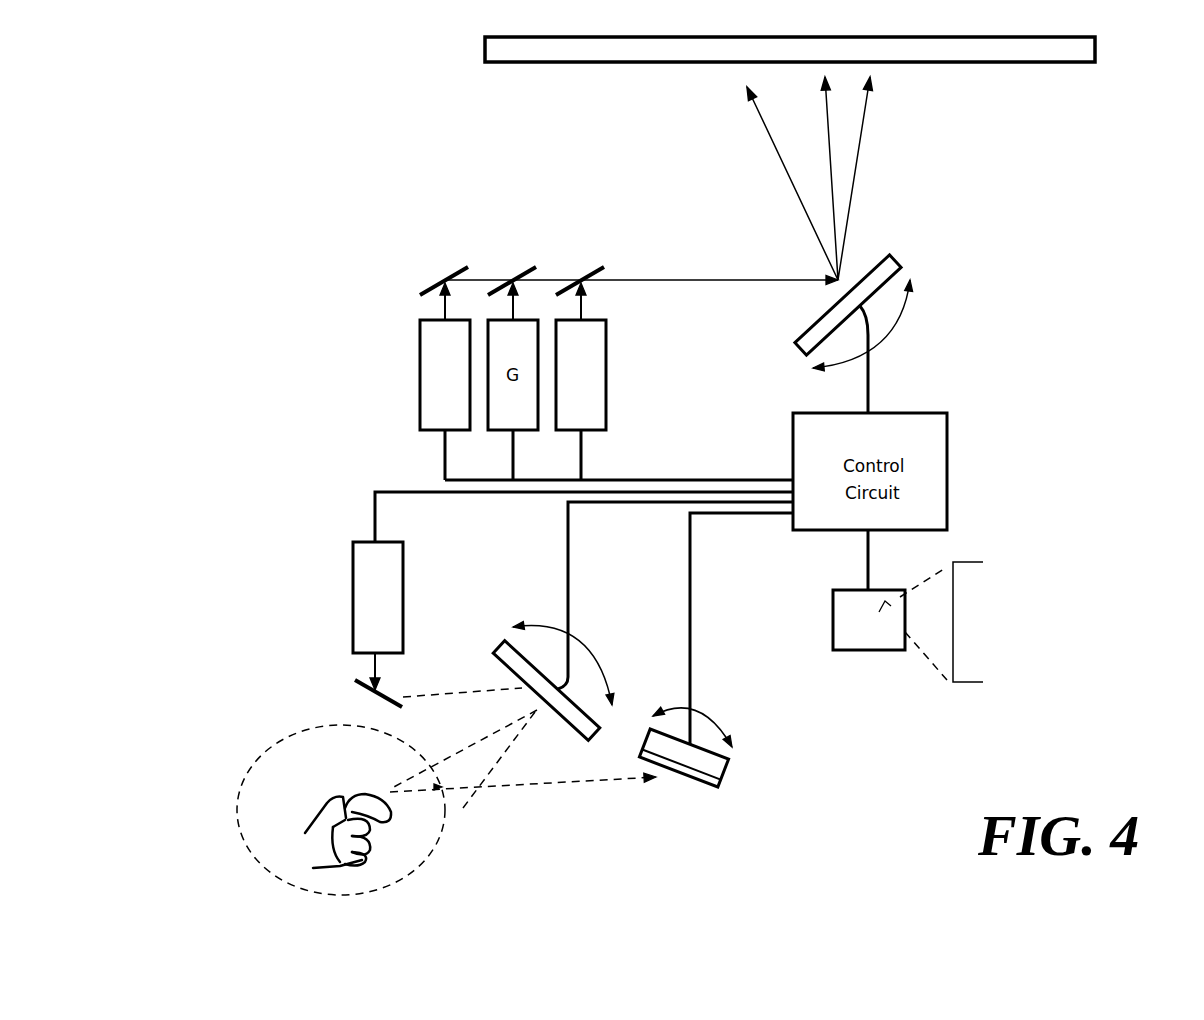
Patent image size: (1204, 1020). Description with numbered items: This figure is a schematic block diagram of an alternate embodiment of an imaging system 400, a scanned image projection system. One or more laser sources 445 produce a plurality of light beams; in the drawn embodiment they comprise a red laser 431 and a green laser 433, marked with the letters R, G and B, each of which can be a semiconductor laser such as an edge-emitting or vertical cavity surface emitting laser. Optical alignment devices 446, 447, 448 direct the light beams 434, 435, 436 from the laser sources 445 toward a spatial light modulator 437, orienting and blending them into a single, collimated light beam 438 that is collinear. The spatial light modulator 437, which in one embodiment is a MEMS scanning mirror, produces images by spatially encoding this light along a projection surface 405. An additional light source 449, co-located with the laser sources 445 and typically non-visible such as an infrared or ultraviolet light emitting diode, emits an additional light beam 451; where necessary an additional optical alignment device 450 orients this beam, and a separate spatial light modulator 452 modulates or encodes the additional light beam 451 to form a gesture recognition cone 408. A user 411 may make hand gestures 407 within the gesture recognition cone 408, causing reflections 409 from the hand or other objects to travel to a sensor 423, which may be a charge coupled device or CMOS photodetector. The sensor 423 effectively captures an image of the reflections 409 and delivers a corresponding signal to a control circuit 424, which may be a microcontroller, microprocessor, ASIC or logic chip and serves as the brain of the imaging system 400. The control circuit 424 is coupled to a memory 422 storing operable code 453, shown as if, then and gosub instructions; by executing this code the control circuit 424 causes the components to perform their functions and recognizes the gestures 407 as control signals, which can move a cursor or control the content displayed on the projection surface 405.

The imaging system 400 is at (317, 232).
The projection surface 405 is at (790, 72).
The hand gestures 407 is at (384, 758).
The gesture recognition cone 408 is at (463, 808).
The reflections 409 is at (507, 787).
The user 411 is at (343, 805).
The memory 422 is at (833, 640).
The sensor 423 is at (722, 785).
The control circuit 424 is at (790, 522).
The red laser 431 is at (432, 358).
The green laser 433 is at (562, 420).
The light beam 434 is at (443, 307).
The light beam 435 is at (511, 307).
The light beam 436 is at (579, 307).
The spatial light modulator 437 is at (790, 338).
The collimated light beam 438 is at (647, 282).
The laser sources 445 is at (618, 380).
The optical alignment device 446 is at (462, 267).
The optical alignment device 447 is at (530, 267).
The optical alignment device 448 is at (600, 267).
The additional light source 449 is at (358, 582).
The additional optical alignment device 450 is at (355, 680).
The additional light beam 451 is at (412, 695).
The separate spatial light modulator 452 is at (572, 720).
The operable code 453 is at (967, 560).